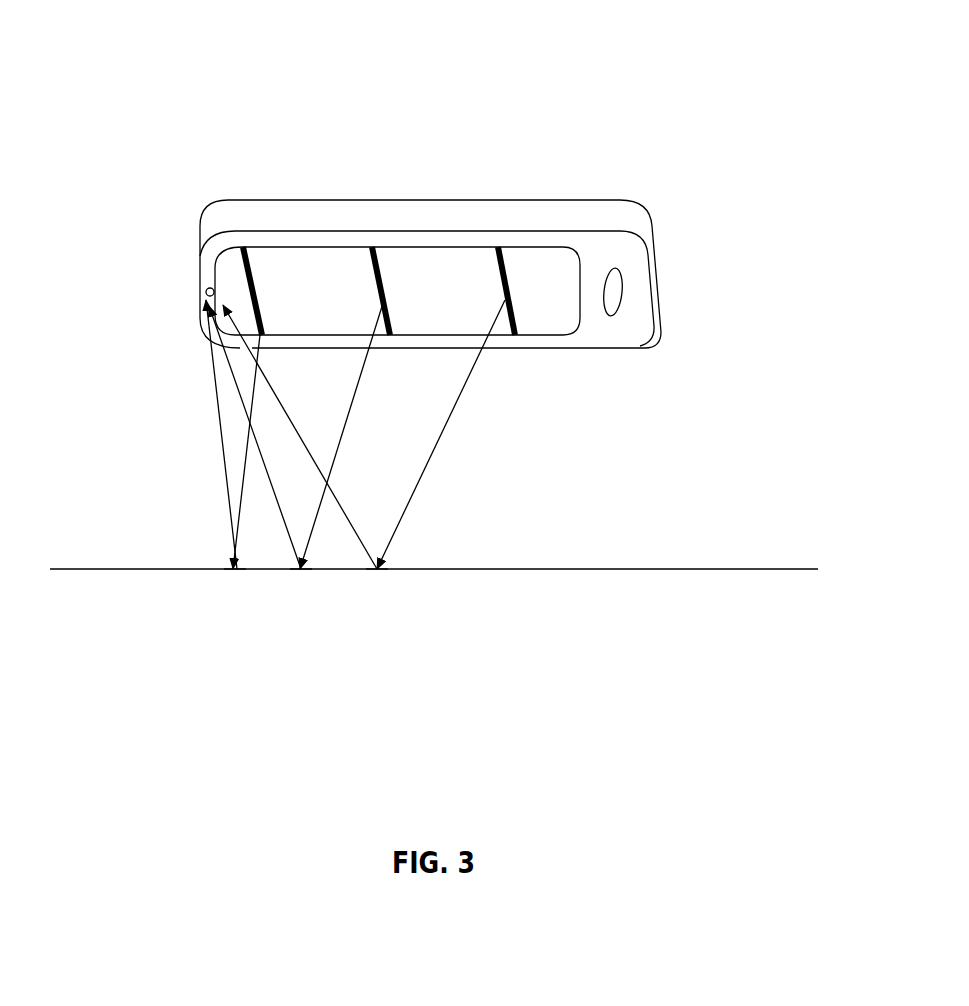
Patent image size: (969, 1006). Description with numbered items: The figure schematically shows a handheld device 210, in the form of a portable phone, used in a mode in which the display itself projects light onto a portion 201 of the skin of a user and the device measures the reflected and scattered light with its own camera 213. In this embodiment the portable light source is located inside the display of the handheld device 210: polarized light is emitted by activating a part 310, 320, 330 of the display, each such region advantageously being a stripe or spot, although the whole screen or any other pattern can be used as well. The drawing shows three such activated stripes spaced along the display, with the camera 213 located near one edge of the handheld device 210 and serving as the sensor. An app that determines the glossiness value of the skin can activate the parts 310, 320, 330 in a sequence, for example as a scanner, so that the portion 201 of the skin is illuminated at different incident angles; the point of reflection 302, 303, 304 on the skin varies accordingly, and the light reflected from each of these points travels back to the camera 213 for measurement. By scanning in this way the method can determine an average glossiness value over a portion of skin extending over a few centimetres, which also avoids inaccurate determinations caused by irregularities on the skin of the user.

The portion of skin 201 is at (540, 569).
The handheld device 210 is at (608, 337).
The camera 213 is at (204, 290).
The part of the display 310 is at (248, 258).
The part of the display 320 is at (383, 260).
The part of the display 330 is at (513, 260).
The point of reflection 302 is at (232, 580).
The point of reflection 303 is at (298, 580).
The point of reflection 304 is at (372, 572).